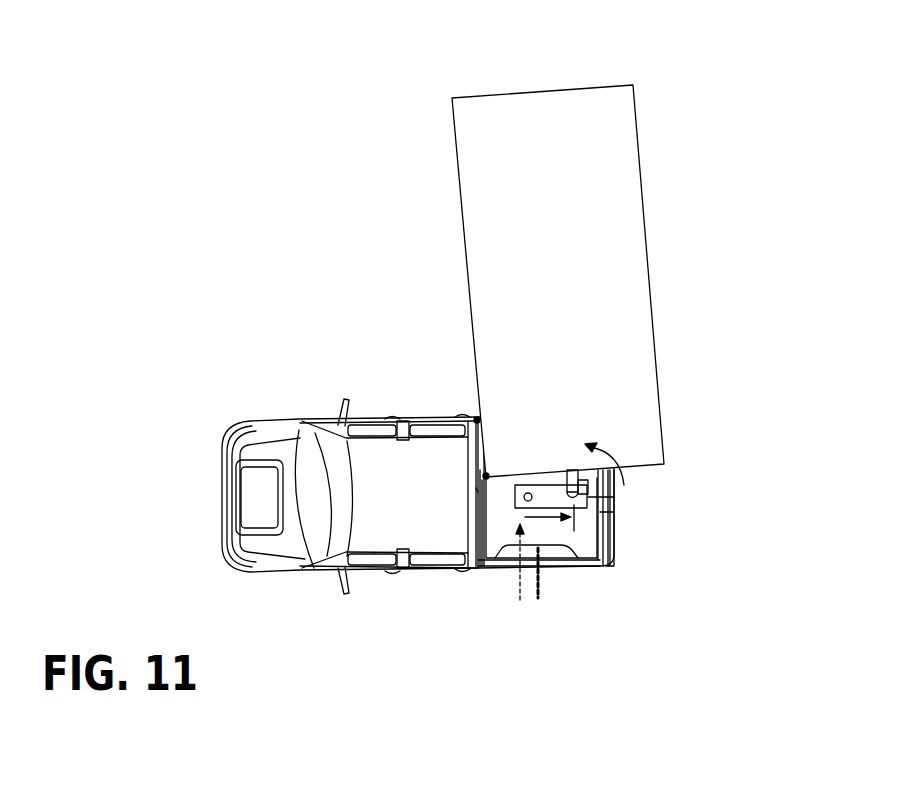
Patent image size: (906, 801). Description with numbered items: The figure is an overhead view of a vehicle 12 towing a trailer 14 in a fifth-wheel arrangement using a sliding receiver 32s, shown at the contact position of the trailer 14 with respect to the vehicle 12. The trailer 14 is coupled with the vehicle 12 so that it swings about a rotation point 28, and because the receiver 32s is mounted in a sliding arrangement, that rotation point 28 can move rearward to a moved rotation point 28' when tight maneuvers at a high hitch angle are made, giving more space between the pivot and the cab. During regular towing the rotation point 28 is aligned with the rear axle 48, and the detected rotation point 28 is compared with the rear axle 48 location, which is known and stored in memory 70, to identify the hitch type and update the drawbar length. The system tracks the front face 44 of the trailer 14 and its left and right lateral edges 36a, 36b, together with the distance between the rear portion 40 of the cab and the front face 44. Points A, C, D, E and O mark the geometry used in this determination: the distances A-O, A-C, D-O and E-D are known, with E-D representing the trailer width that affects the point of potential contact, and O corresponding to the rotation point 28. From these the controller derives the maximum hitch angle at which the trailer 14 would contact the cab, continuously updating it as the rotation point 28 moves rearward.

The vehicle 12 is at (295, 411).
The trailer 14 is at (612, 296).
The rear portion of the cab 40 is at (472, 468).
The left lateral edge of the trailer 36a is at (478, 497).
The right lateral edge of the trailer 36b is at (638, 469).
The front face of the trailer 44 is at (640, 471).
The memory 70 is at (552, 508).
The rotation point 28 is at (511, 565).
The moved rotation point 28' is at (653, 548).
The sliding receiver 32s is at (522, 600).
The rear axle 48 is at (540, 583).
The point A is at (477, 490).
The point C is at (468, 407).
The point D is at (569, 448).
The point E is at (492, 463).
The point O is at (561, 525).